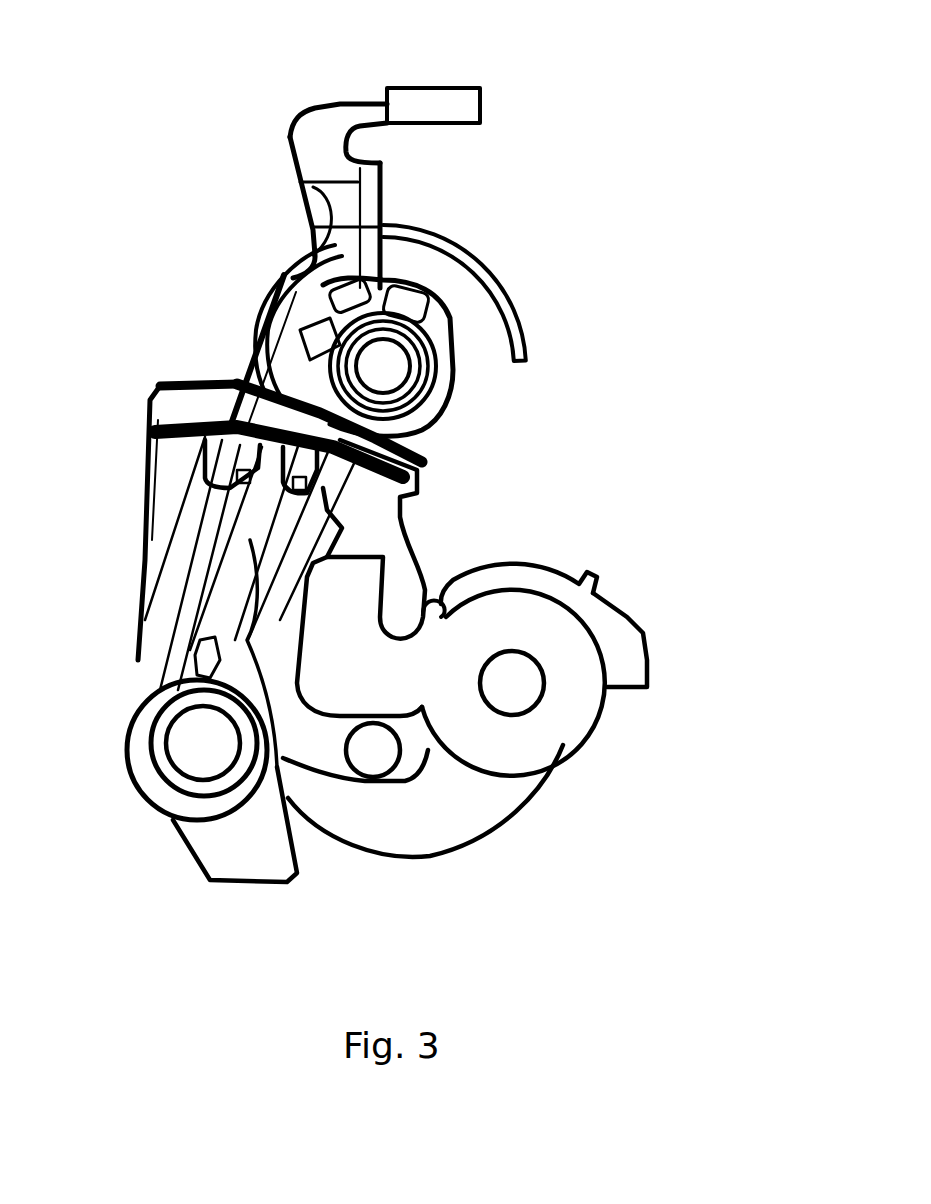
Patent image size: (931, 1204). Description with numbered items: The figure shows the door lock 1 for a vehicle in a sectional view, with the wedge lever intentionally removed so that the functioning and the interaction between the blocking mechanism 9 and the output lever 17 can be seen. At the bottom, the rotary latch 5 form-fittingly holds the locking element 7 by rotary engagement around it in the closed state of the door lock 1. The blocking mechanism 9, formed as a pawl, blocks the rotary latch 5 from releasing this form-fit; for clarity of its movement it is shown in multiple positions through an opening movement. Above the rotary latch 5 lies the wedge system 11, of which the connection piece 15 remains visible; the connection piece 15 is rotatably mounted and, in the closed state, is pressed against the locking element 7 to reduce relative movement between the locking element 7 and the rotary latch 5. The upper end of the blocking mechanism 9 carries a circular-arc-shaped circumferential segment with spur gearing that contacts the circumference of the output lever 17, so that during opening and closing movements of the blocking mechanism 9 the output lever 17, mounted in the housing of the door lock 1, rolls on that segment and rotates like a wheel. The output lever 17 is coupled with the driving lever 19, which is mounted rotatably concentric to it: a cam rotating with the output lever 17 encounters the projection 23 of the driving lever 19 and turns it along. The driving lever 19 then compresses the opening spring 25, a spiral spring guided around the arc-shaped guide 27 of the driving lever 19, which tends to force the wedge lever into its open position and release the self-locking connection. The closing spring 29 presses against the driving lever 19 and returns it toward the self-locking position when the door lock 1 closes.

The door lock 1 is at (230, 140).
The closing spring 29 is at (462, 102).
The driving lever 19 is at (318, 165).
The opening spring 25 is at (515, 270).
The arc-shaped guide 27 is at (467, 257).
The projection 23 is at (243, 373).
The output lever 17 is at (438, 378).
The blocking mechanism 9 is at (147, 713).
The wedge system 11 is at (458, 578).
The connection piece 15 is at (363, 581).
The locking element 7 is at (374, 757).
The rotary latch 5 is at (512, 798).